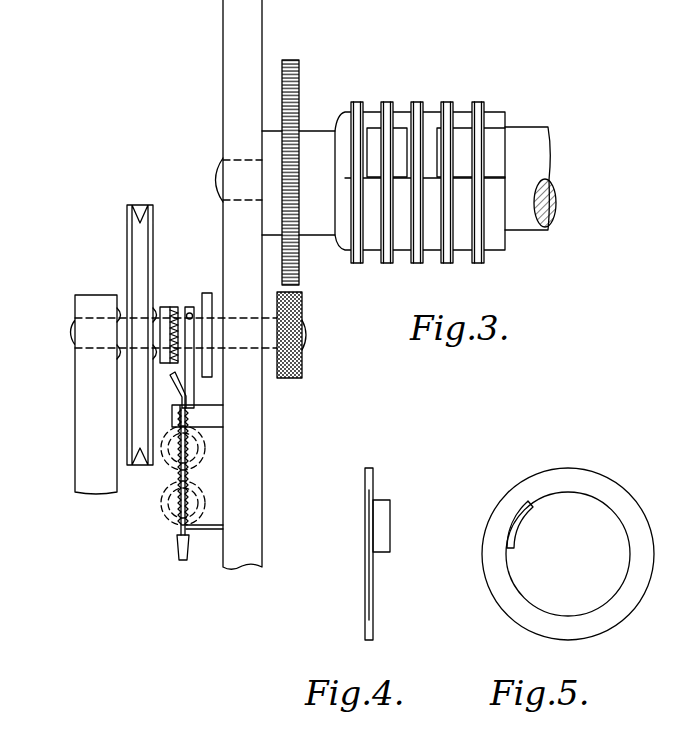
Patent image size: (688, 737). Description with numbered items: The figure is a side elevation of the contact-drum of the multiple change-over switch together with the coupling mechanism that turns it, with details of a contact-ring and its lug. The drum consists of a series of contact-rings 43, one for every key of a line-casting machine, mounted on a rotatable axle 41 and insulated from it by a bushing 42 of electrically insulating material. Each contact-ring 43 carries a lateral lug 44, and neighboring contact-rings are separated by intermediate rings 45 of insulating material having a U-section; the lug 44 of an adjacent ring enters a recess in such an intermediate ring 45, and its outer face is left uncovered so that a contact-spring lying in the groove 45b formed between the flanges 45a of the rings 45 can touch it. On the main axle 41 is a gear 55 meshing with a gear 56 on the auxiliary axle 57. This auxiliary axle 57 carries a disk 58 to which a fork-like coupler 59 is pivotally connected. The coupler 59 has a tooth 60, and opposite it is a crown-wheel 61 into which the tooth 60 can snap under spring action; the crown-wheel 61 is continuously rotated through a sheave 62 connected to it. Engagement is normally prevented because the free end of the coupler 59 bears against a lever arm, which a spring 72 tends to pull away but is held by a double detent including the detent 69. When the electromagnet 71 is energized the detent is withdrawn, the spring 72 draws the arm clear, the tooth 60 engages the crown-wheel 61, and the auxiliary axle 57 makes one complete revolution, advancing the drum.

In FIG. 3, the rotatable axle 41 is at (369, 135).
In FIG. 3, the bushing 42 is at (503, 151).
In FIG. 3, the contact-ring 43 is at (362, 95).
In FIG. 4, the contact-ring 43 is at (372, 474).
In FIG. 5, the contact-ring 43 is at (623, 500).
In FIG. 3, the lateral lug 44 is at (492, 140).
In FIG. 4, the lateral lug 44 is at (388, 527).
In FIG. 5, the lateral lug 44 is at (510, 527).
In FIG. 3, the intermediate ring 45 is at (460, 113).
In FIG. 3, the flange 45a is at (382, 108).
In FIG. 3, the groove 45b is at (430, 252).
In FIG. 3, the gear 55 is at (290, 58).
In FIG. 3, the gear 56 is at (290, 347).
In FIG. 3, the auxiliary axle 57 is at (306, 337).
In FIG. 3, the disk 58 is at (208, 292).
In FIG. 3, the fork-like coupler 59 is at (192, 306).
In FIG. 3, the tooth 60 is at (180, 364).
In FIG. 3, the crown-wheel 61 is at (168, 307).
In FIG. 3, the sheave 62 is at (129, 242).
In FIG. 3, the detent 69 is at (177, 542).
In FIG. 3, the electromagnet 71 is at (197, 492).
In FIG. 3, the spring 72 is at (176, 471).